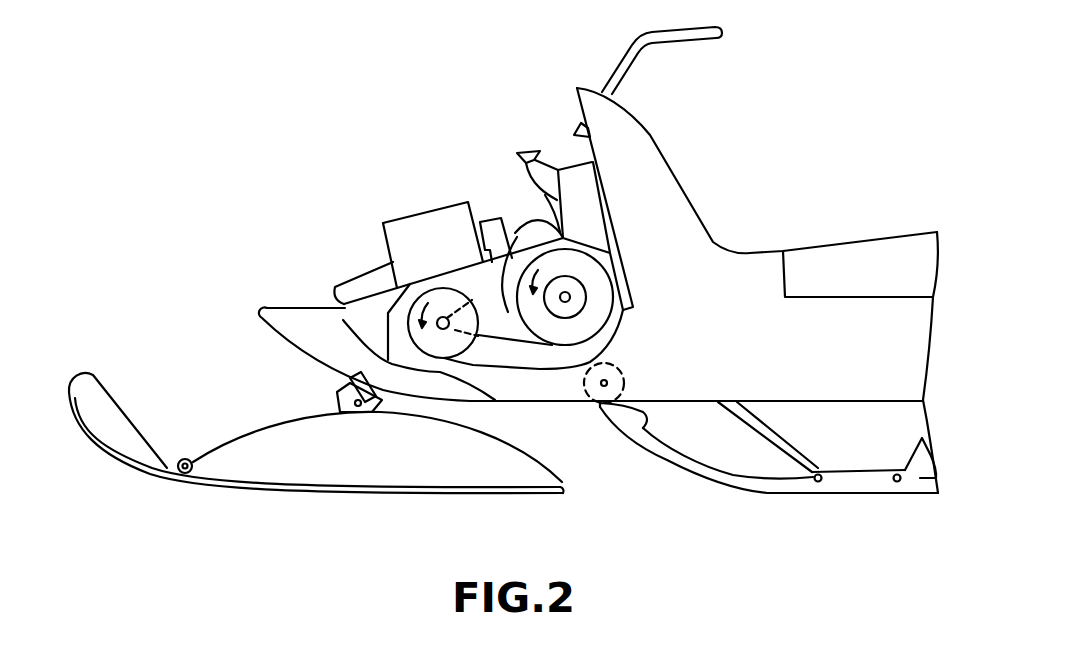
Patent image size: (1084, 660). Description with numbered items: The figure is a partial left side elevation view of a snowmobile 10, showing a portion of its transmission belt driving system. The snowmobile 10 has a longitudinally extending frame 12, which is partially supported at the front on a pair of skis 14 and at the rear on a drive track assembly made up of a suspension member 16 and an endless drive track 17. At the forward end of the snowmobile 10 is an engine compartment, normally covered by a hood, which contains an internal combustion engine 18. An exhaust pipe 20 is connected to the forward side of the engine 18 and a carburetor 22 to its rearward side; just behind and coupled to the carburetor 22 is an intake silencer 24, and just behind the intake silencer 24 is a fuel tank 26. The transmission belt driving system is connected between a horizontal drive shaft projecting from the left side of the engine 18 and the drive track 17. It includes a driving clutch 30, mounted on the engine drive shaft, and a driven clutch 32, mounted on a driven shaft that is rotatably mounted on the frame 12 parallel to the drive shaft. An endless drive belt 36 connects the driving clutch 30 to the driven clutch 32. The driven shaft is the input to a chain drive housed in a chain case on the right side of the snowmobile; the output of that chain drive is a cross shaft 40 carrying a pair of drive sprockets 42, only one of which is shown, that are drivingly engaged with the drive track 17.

The snowmobile 10 is at (733, 186).
The frame 12 is at (548, 403).
The skis 14 is at (480, 493).
The suspension member 16 is at (758, 415).
The endless drive track 17 is at (621, 437).
The internal combustion engine 18 is at (420, 210).
The exhaust pipe 20 is at (350, 278).
The carburetor 22 is at (490, 220).
The intake silencer 24 is at (517, 230).
The fuel tank 26 is at (518, 232).
The driving clutch 30 is at (481, 368).
The driven clutch 32 is at (577, 348).
The endless drive belt 36 is at (461, 323).
The cross shaft 40 is at (618, 378).
The drive sprockets 42 is at (643, 412).